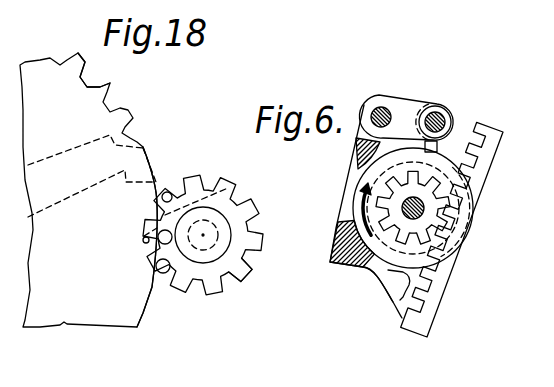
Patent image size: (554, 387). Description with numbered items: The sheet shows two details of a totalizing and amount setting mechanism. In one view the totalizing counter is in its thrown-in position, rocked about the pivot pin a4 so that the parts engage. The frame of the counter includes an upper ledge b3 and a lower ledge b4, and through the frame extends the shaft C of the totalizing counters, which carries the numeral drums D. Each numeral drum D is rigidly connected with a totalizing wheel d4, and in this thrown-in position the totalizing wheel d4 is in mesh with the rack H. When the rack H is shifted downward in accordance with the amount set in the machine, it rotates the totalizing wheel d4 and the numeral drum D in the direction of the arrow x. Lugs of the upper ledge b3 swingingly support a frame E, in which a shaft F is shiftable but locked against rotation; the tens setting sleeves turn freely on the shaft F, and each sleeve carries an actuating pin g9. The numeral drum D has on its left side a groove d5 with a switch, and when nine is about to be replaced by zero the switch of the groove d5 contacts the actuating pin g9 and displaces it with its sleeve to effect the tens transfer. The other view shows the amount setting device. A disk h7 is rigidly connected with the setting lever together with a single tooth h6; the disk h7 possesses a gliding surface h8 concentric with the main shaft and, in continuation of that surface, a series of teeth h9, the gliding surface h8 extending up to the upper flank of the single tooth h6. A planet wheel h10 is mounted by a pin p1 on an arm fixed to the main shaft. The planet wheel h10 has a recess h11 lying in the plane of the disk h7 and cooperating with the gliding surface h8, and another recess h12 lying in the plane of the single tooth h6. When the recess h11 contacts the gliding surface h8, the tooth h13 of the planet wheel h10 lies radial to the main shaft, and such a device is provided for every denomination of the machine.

In FIG. 18, the disk h7 is at (52, 290).
In FIG. 18, the teeth h9 is at (108, 88).
In FIG. 18, the single tooth h6 is at (150, 160).
In FIG. 18, the gliding surface h8 is at (152, 300).
In FIG. 18, the recess h11 is at (167, 192).
In FIG. 18, the tooth h13 is at (143, 241).
In FIG. 18, the recess h12 is at (222, 193).
In FIG. 18, the pin p1 is at (203, 235).
In FIG. 18, the planet wheel h10 is at (232, 278).
In FIG. 6, the rack H is at (432, 305).
In FIG. 6, the frame E is at (398, 105).
In FIG. 6, the shaft F is at (436, 112).
In FIG. 6, the actuating pin g9 is at (452, 130).
In FIG. 6, the upper ledge b3 is at (354, 150).
In FIG. 6, the ledge b4 is at (340, 242).
In FIG. 6, the numeral drum D is at (372, 175).
In FIG. 6, the groove d5 is at (455, 186).
In FIG. 6, the arrow x is at (355, 209).
In FIG. 6, the shaft C is at (423, 213).
In FIG. 6, the totalizing wheel d4 is at (420, 235).
In FIG. 6, the pivot pin a4 is at (410, 287).